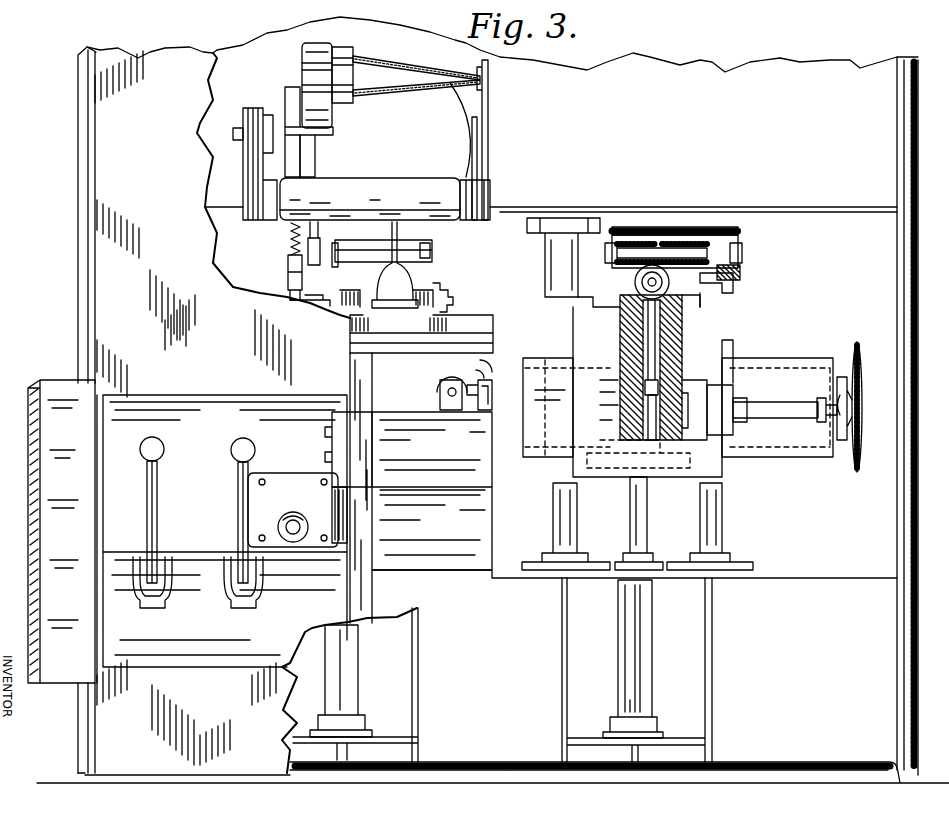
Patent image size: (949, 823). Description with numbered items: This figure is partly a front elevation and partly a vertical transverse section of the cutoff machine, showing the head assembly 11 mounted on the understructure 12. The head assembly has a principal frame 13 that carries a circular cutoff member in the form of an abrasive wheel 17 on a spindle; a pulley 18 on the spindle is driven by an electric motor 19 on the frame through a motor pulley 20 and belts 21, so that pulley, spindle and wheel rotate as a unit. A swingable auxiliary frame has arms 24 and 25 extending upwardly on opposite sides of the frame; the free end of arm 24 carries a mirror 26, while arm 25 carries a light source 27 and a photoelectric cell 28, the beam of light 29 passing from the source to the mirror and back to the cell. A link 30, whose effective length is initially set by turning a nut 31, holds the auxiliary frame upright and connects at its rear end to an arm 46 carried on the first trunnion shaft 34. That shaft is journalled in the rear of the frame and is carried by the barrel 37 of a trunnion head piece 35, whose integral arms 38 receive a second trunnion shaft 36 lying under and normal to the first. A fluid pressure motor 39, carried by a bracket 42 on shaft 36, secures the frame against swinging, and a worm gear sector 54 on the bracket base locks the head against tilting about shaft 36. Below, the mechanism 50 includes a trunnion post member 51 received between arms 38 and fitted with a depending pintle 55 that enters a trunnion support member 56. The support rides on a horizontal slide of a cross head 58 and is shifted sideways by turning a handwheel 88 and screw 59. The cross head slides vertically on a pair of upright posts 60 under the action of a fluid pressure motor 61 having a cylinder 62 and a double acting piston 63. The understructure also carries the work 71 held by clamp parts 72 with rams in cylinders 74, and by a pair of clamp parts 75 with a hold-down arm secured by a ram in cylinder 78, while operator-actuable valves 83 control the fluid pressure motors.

The head assembly 11 is at (388, 142).
The understructure 12 is at (100, 180).
The principal frame 13 is at (385, 190).
The abrasive wheel 17 is at (477, 152).
The pulley 18 is at (272, 224).
The electric motor 19 is at (457, 110).
The motor pulley 20 is at (272, 108).
The belts 21 is at (252, 166).
The arm 24 is at (488, 142).
The arm 25 is at (307, 152).
The mirror 26 is at (478, 67).
The light source 27 is at (343, 57).
The photoelectric cell 28 is at (342, 100).
The beam of light 29 is at (394, 82).
The link 30 is at (290, 243).
The nut 31 is at (290, 263).
The first trunnion shaft 34 is at (433, 255).
The trunnion head piece 35 is at (413, 247).
The second trunnion shaft 36 is at (640, 294).
The barrel 37 is at (680, 268).
The integral arms 38 is at (642, 288).
The fluid pressure motor 39 is at (453, 314).
The bracket 42 is at (402, 281).
The arm 46 is at (323, 302).
The mechanism 50 is at (728, 450).
The trunnion post member 51 is at (680, 335).
The worm gear sector 54 is at (450, 300).
The pintle 55 is at (650, 395).
The trunnion support member 56 is at (695, 380).
The cross head 58 is at (568, 325).
The screw 59 is at (774, 412).
The upright posts 60 is at (558, 518).
The fluid pressure motor 61 is at (352, 642).
The cylinder 62 is at (645, 683).
The double acting piston 63 is at (633, 513).
The work 71 is at (492, 390).
The clamp part 72 is at (437, 395).
The cylinder 74 is at (440, 386).
The clamp parts 75 is at (473, 413).
The cylinder 78 is at (480, 370).
The valves 83 is at (227, 590).
The handwheel 88 is at (863, 402).